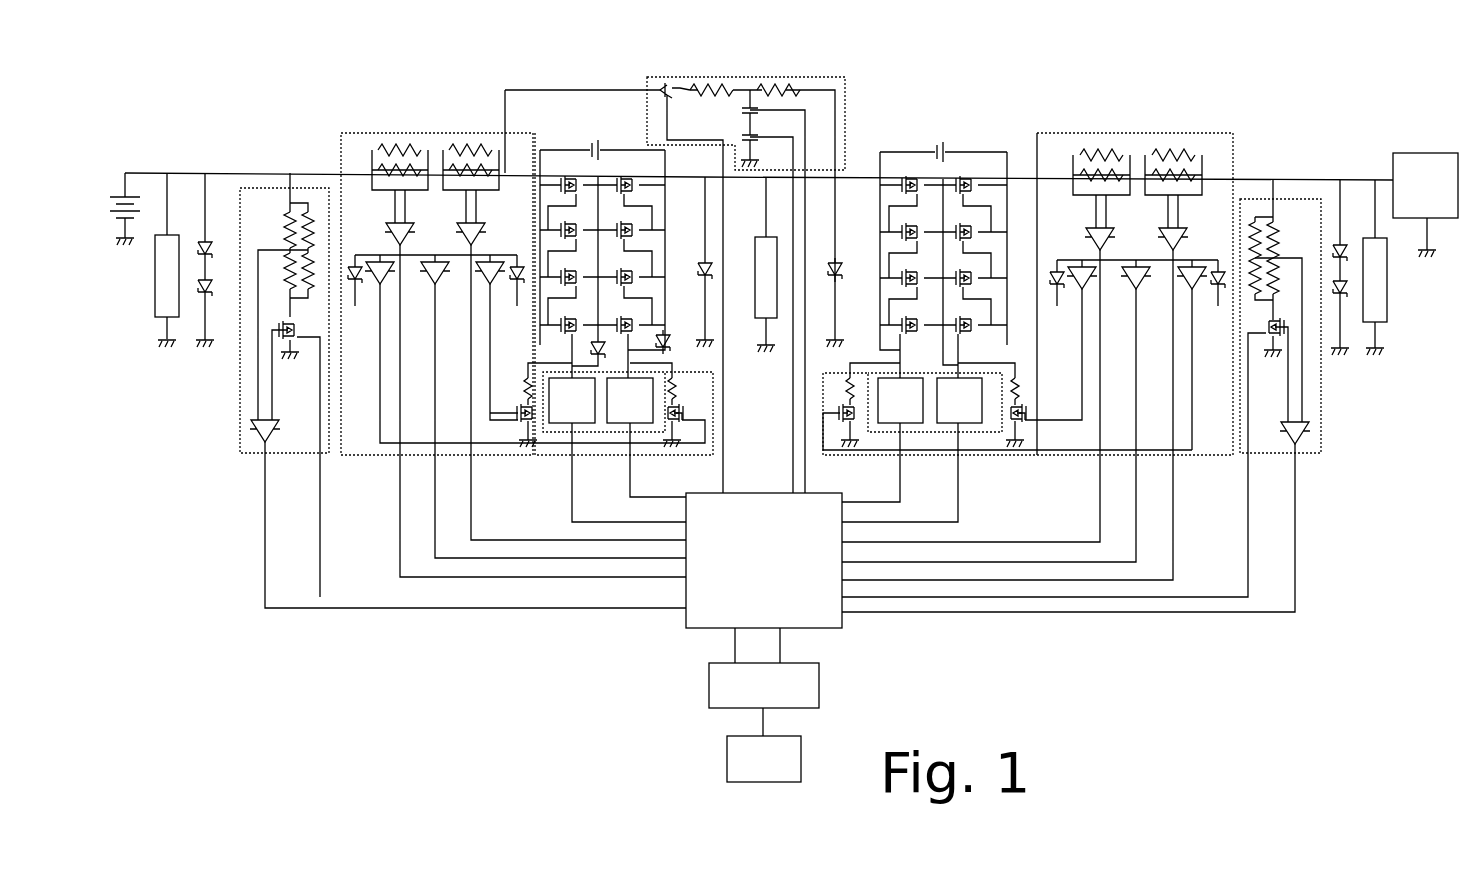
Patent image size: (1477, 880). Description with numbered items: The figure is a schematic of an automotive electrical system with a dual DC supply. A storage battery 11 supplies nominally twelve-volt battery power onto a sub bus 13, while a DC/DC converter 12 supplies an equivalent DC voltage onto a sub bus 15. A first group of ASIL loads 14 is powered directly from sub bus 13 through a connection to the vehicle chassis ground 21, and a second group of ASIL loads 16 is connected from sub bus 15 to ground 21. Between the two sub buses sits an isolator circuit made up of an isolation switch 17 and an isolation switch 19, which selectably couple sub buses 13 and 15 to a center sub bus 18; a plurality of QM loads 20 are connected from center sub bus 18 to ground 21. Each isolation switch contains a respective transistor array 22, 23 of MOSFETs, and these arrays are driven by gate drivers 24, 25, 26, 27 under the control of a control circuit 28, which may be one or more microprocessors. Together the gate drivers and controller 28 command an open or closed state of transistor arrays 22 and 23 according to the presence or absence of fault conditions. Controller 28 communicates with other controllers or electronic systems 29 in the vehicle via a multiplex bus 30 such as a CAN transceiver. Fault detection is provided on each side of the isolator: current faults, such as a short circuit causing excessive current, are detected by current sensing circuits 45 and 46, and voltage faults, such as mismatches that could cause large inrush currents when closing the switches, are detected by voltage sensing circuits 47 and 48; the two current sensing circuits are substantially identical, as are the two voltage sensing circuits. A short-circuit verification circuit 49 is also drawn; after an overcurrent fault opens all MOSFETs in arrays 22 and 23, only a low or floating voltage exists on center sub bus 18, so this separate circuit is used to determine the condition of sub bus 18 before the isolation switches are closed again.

The storage battery 11 is at (116, 190).
The DC/DC converter 12 is at (1415, 153).
The sub bus 13 is at (190, 173).
The ASIL loads 14 is at (152, 290).
The sub bus 15 is at (1318, 180).
The ASIL loads 16 is at (1387, 290).
The isolation switch 17 is at (617, 125).
The center sub bus 18 is at (857, 178).
The isolation switch 19 is at (922, 125).
The QM loads 20 is at (752, 257).
The vehicle ground 21 is at (175, 347).
The transistor array 22 is at (556, 170).
The transistor array 23 is at (978, 165).
The gate driver 24 is at (562, 425).
The gate driver 25 is at (620, 425).
The gate driver 26 is at (910, 425).
The gate driver 27 is at (968, 425).
The control circuit 28 is at (843, 632).
The electronic systems 29 is at (727, 762).
The multiplex bus 30 is at (709, 687).
The current sensing circuit 45 is at (373, 133).
The current sensing circuit 46 is at (1077, 133).
The voltage sensing circuit 47 is at (243, 438).
The voltage sensing circuit 48 is at (1321, 413).
The short-circuit verification circuit 49 is at (762, 77).